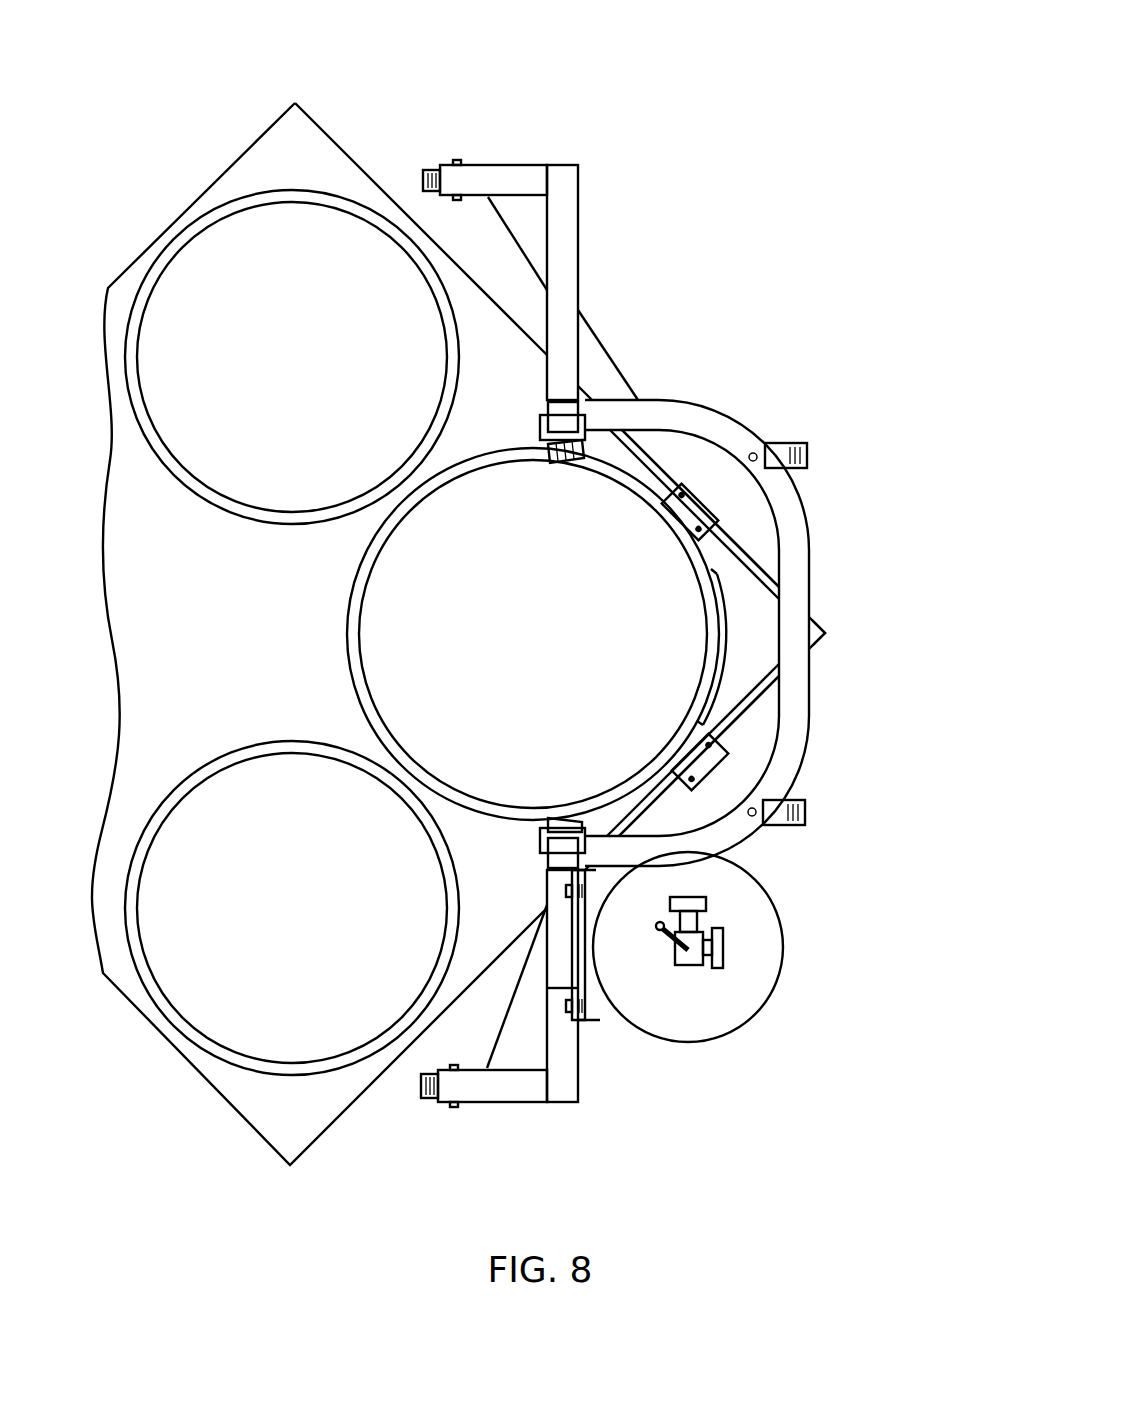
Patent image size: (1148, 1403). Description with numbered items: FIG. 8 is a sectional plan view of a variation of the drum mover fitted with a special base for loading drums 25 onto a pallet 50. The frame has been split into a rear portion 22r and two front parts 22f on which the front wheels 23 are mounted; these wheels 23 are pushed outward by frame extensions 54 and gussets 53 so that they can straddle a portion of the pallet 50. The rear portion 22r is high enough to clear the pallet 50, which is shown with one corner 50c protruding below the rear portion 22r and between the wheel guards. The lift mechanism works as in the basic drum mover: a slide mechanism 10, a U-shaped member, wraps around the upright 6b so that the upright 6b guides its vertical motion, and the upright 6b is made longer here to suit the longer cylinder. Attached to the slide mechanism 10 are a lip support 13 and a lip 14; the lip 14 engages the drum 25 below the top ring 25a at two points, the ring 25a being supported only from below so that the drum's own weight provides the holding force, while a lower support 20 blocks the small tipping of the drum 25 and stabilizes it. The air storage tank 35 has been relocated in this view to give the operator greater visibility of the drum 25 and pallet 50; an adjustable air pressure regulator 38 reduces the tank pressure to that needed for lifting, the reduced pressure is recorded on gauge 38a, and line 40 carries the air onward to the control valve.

The pallet 50 is at (323, 130).
The corner of pallet 50c is at (828, 631).
The drum 25 is at (222, 508).
The top ring 25a is at (348, 616).
The front parts of frame 22f is at (510, 165).
The rear portion of frame 22r is at (812, 545).
The frame extensions 54 is at (590, 245).
The gussets 53 is at (508, 230).
The front wheels 23 is at (430, 165).
The slide mechanism 10 is at (538, 422).
The upright 6b is at (566, 400).
The lip support 13 is at (586, 448).
The lip 14 is at (548, 457).
The lower support 20 is at (690, 540).
The air storage tank 35 is at (783, 960).
The adjustable air pressure regulator 38 is at (700, 920).
The gauge 38a is at (717, 968).
The air supply line 40 is at (664, 946).